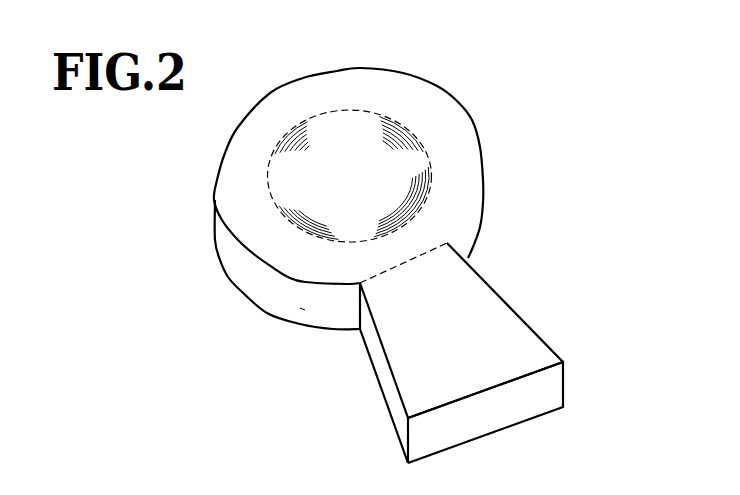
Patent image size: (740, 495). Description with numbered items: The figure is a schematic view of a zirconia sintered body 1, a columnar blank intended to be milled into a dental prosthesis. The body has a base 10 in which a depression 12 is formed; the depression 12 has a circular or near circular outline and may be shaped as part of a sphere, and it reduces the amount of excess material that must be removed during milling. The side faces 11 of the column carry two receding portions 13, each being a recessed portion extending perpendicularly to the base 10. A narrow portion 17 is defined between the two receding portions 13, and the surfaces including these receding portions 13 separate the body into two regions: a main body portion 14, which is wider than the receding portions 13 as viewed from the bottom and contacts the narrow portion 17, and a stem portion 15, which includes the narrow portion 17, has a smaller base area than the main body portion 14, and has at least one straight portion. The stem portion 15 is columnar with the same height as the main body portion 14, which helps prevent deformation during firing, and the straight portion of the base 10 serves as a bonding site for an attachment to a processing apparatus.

The zirconia sintered body 1 is at (543, 387).
The base 10 is at (412, 231).
The side faces 11 is at (300, 308).
The depression 12 is at (363, 147).
The receding portion 13 is at (447, 243).
The main body portion 14 is at (263, 133).
The stem portion 15 is at (527, 345).
The narrow portion 17 is at (360, 283).